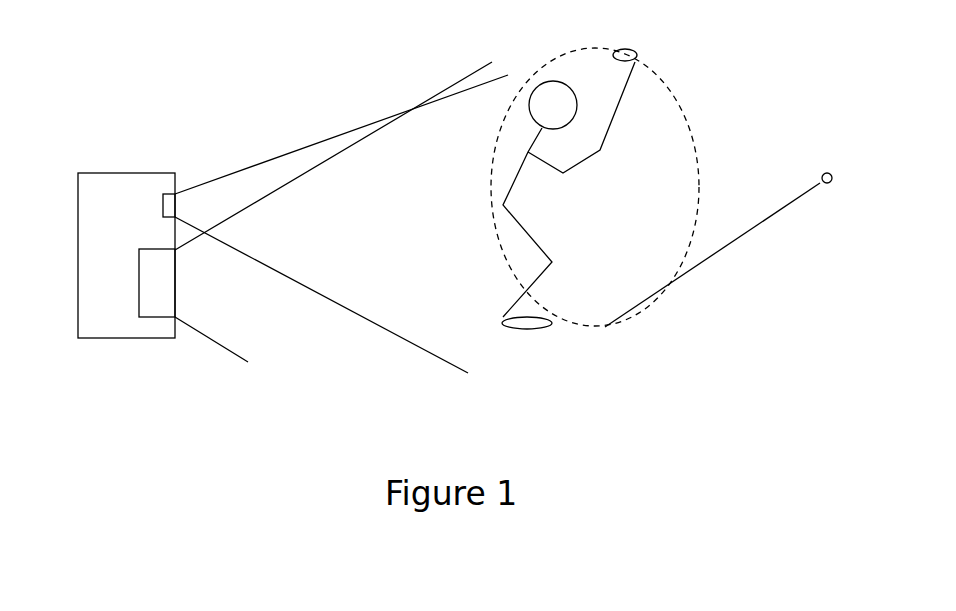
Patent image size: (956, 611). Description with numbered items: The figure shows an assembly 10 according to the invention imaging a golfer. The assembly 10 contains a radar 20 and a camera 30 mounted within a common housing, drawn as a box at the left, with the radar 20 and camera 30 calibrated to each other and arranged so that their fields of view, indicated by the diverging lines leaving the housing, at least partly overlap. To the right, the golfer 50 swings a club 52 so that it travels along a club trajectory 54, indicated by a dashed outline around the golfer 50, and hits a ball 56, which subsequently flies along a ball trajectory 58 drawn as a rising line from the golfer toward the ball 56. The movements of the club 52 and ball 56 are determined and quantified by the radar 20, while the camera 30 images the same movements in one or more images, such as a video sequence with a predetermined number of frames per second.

The assembly 10 is at (128, 211).
The radar 20 is at (126, 295).
The camera 30 is at (155, 184).
The golfer 50 is at (638, 155).
The club 52 is at (638, 85).
The club trajectory 54 is at (711, 177).
The ball 56 is at (819, 199).
The ball trajectory 58 is at (722, 266).